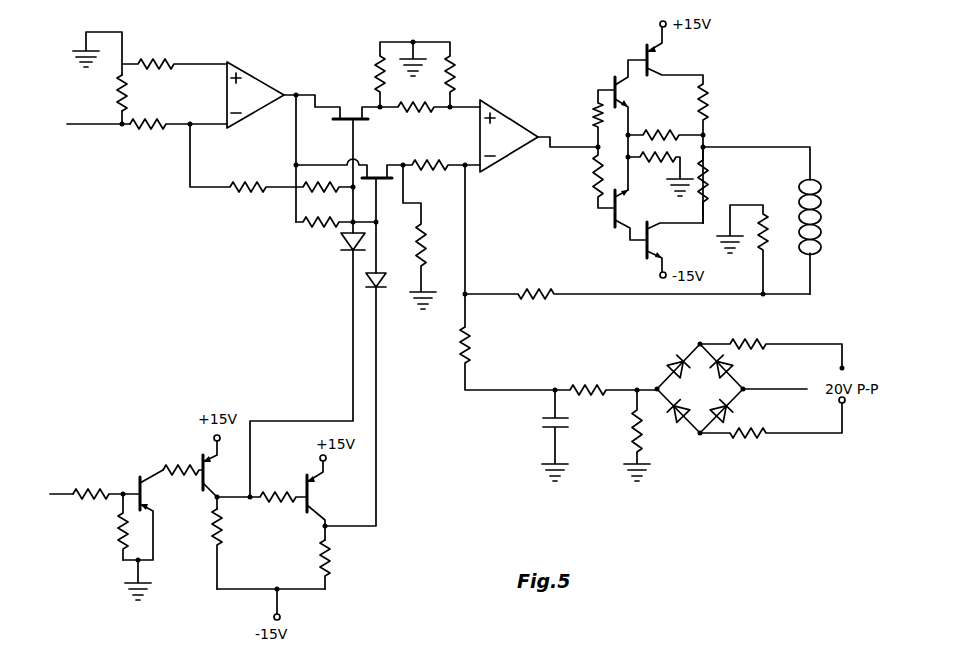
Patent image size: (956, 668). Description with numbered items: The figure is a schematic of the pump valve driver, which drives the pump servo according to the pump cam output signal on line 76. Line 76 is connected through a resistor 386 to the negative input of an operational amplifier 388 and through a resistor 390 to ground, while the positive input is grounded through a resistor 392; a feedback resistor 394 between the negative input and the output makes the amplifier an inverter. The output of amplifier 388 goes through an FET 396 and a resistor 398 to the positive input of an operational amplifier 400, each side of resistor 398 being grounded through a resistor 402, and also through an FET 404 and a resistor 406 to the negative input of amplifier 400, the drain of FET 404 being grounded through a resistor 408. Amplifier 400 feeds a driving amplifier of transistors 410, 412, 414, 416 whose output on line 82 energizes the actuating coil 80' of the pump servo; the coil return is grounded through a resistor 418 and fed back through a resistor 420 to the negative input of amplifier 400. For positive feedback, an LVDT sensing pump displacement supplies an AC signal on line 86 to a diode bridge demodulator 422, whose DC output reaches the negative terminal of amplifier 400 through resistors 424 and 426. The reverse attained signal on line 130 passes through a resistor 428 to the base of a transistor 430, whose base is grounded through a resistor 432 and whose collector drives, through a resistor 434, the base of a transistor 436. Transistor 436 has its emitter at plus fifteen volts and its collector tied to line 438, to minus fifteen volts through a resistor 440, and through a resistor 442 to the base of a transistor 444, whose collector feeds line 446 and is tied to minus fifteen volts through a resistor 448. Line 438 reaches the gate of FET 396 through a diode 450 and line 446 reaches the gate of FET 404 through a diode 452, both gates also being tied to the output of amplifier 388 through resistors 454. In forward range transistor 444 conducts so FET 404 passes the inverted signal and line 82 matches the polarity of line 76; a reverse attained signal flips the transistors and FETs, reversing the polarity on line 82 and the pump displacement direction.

The line 76 is at (82, 126).
The line 130 is at (53, 493).
The resistor 386 is at (144, 132).
The operational amplifier 388 is at (262, 80).
The resistor 390 is at (132, 95).
The resistor 392 is at (160, 60).
The feedback resistor 394 is at (250, 182).
The FET 396 is at (352, 110).
The resistor 398 is at (417, 109).
The operational amplifier 400 is at (508, 119).
The resistor 402 is at (455, 84).
The FET 404 is at (390, 181).
The resistor 406 is at (424, 163).
The resistor 408 is at (425, 240).
The transistor 410 is at (613, 84).
The transistor 412 is at (663, 61).
The transistor 414 is at (613, 212).
The transistor 416 is at (645, 249).
The resistor 418 is at (758, 247).
The resistor 420 is at (533, 290).
The diode bridge demodulator 422 is at (697, 437).
The resistor 424 is at (582, 387).
The resistor 426 is at (478, 351).
The resistor 428 is at (93, 490).
The transistor 430 is at (147, 490).
The resistor 432 is at (118, 527).
The resistor 434 is at (172, 468).
The transistor 436 is at (212, 478).
The line 438 is at (353, 334).
The resistor 440 is at (230, 530).
The resistor 442 is at (272, 490).
The transistor 444 is at (317, 493).
The line 446 is at (380, 455).
The resistor 448 is at (333, 550).
The diode 450 is at (343, 241).
The diode 452 is at (370, 281).
The resistors 454 is at (320, 213).
The actuating coil 80' is at (831, 237).
The line 82 is at (738, 147).
The line 86 is at (787, 388).